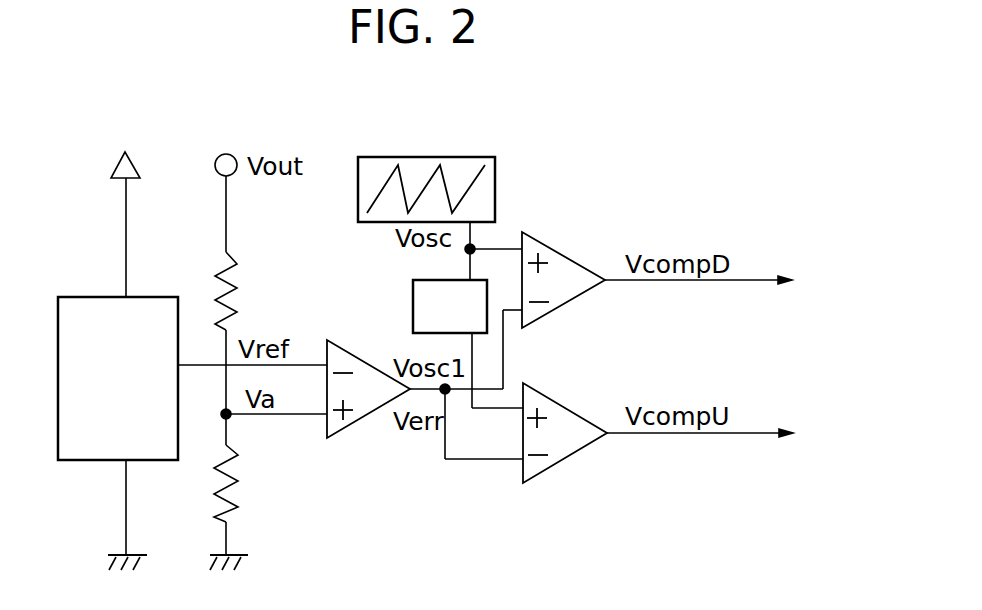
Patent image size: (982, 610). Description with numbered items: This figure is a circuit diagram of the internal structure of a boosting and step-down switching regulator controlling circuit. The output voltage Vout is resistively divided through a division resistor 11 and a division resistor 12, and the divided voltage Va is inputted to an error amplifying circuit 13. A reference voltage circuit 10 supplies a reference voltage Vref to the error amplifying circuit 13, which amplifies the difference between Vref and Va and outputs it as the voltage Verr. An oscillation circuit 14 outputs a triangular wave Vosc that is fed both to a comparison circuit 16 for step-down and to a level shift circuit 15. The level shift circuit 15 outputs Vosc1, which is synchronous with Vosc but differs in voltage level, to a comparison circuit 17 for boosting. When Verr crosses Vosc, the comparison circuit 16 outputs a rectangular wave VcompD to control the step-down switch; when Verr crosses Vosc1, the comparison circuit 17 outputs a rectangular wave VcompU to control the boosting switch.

The reference voltage circuit 10 is at (98, 297).
The division resistor 11 is at (245, 290).
The division resistor 12 is at (244, 498).
The error amplifying circuit 13 is at (362, 418).
The oscillation circuit 14 is at (495, 185).
The level shift circuit 15 is at (413, 303).
The comparison circuit for step-down 16 is at (560, 308).
The comparison circuit for boosting 17 is at (562, 460).